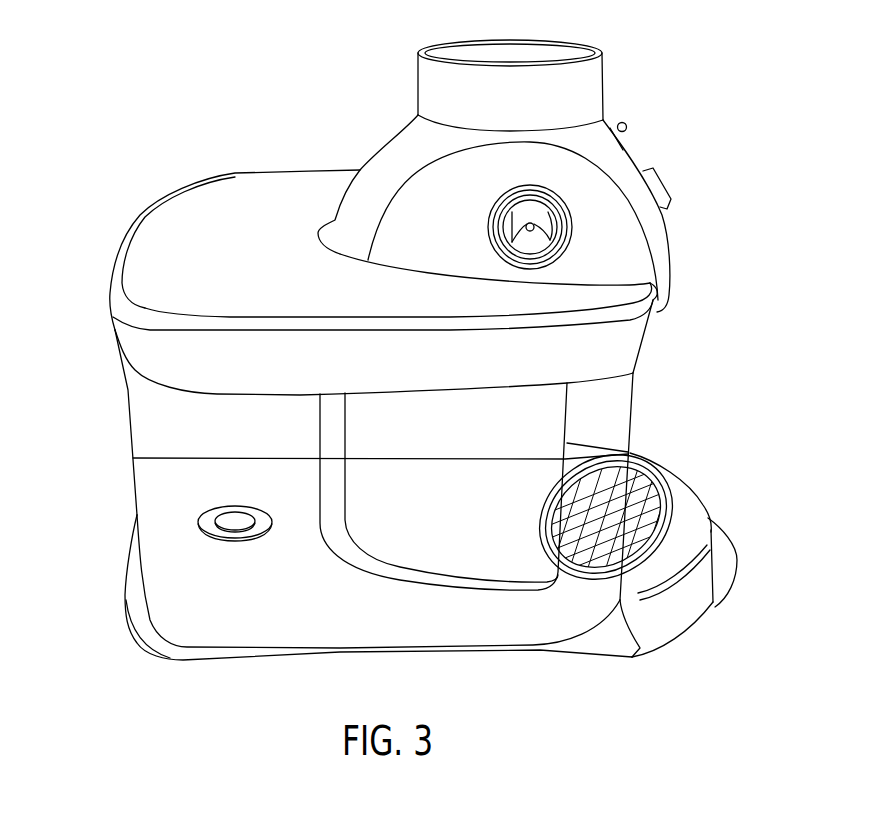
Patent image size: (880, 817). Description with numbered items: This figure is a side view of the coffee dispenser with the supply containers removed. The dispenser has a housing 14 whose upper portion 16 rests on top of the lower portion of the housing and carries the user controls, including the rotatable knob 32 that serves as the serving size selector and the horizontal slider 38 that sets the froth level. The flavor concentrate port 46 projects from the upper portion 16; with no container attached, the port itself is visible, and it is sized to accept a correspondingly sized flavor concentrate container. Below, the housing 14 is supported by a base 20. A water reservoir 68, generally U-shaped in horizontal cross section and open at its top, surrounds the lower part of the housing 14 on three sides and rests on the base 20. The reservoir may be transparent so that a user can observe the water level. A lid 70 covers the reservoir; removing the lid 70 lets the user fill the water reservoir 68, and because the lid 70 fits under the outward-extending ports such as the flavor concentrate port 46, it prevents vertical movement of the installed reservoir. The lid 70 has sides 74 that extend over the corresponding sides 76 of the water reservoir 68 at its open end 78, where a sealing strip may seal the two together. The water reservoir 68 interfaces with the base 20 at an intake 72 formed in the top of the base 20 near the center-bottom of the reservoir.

The housing 14 is at (650, 73).
The upper portion 16 is at (715, 27).
The base 20 is at (727, 572).
The rotatable knob 32 is at (662, 180).
The horizontal slider 38 is at (628, 126).
The flavor concentrate port 46 is at (580, 217).
The water reservoir 68 is at (115, 435).
The lid 70 is at (249, 193).
The intake 72 is at (207, 527).
The sides of the lid 74 is at (113, 320).
The sides of the water reservoir 76 is at (567, 483).
The open end 78 is at (100, 330).